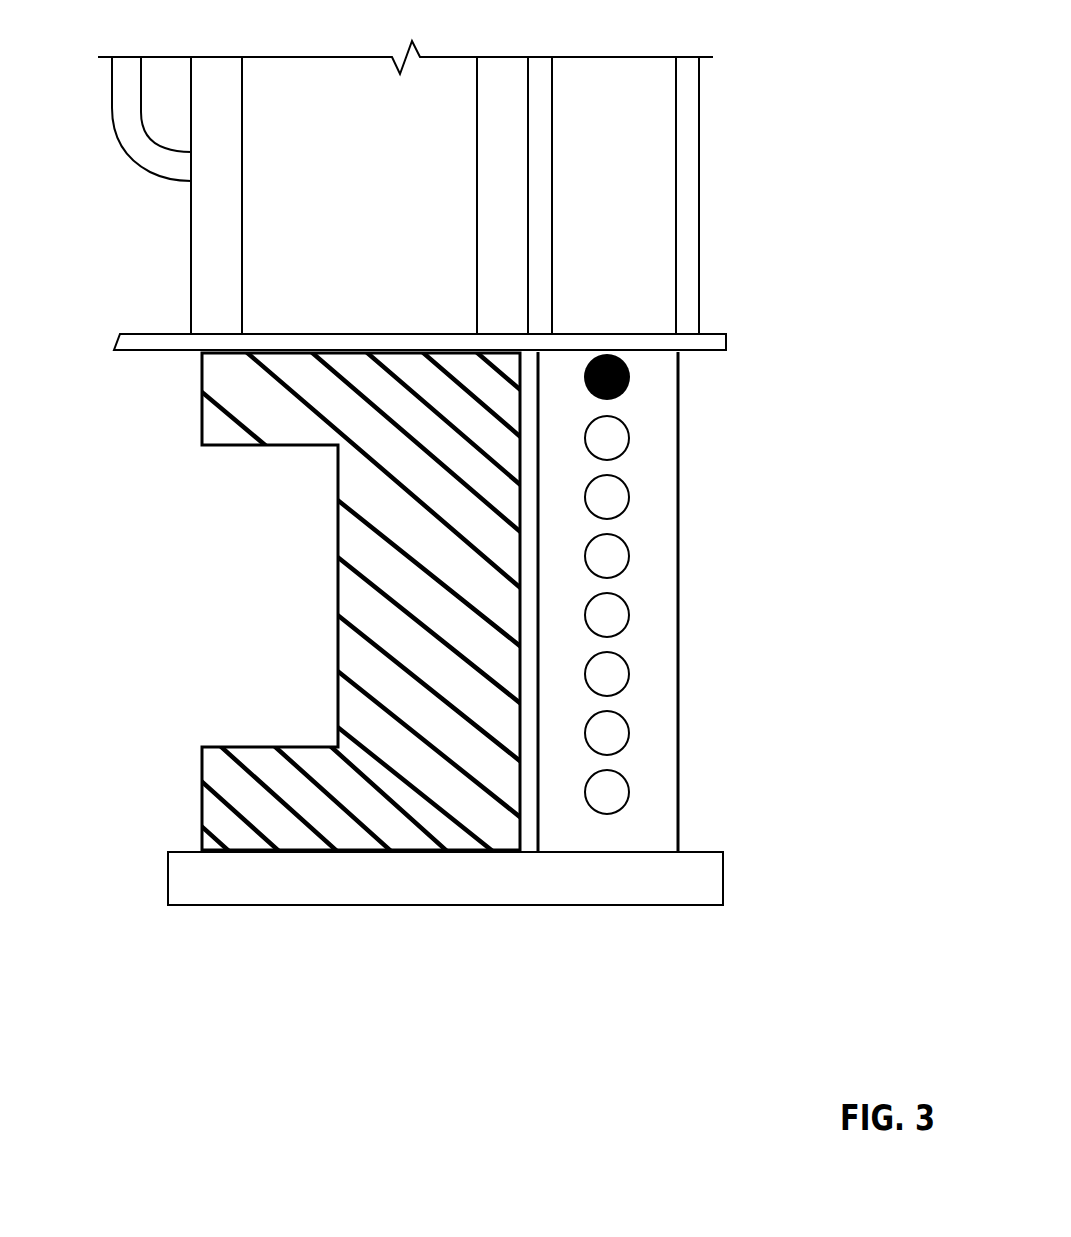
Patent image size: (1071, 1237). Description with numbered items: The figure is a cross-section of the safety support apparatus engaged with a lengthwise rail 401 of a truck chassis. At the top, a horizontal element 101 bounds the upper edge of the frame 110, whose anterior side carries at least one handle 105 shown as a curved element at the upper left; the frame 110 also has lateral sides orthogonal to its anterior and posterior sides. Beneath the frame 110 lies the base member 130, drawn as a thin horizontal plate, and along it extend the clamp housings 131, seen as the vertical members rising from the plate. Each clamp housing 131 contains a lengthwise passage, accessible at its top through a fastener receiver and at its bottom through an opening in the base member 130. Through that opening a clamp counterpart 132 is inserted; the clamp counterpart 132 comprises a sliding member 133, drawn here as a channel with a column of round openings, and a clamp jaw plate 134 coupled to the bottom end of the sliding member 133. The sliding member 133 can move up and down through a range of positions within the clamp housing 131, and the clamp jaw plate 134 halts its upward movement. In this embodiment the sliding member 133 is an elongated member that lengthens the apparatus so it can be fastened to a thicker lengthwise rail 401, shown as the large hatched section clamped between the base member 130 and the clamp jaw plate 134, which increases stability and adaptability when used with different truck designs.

The wall of apparatus 101 is at (302, 73).
The handle 105 is at (130, 116).
The frame 110 is at (790, 60).
The base member 130 is at (750, 326).
The clamp housing 131 is at (695, 130).
The clamp counterpart 132 is at (804, 879).
The sliding member 133 is at (667, 395).
The clamp jaw plate 134 is at (602, 906).
The lengthwise rail 401 is at (338, 583).